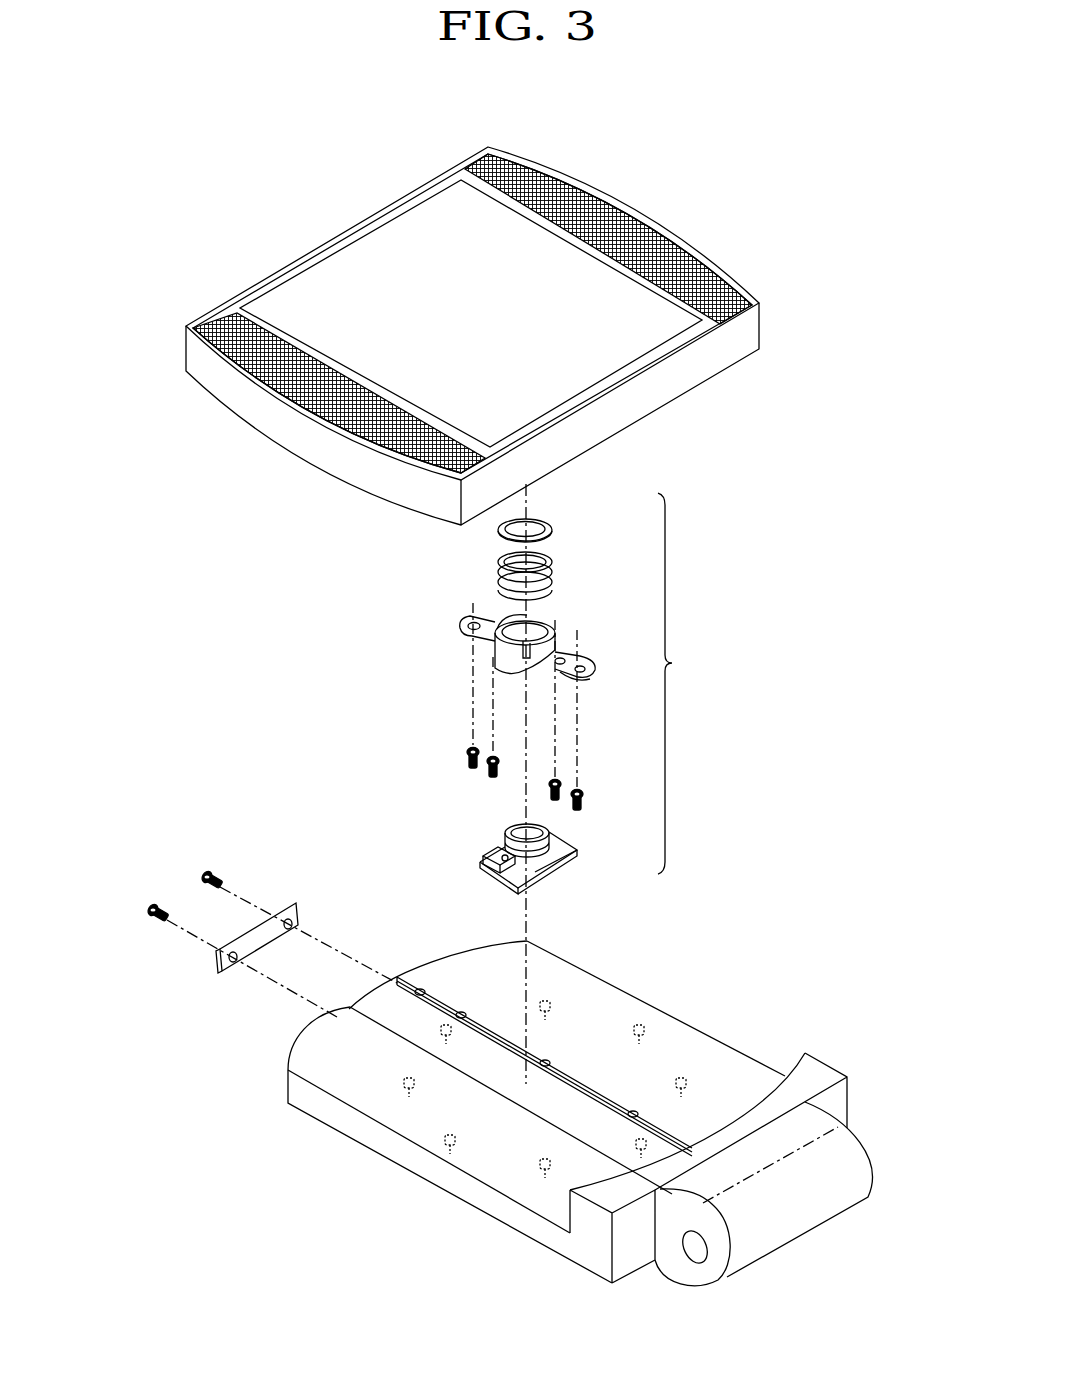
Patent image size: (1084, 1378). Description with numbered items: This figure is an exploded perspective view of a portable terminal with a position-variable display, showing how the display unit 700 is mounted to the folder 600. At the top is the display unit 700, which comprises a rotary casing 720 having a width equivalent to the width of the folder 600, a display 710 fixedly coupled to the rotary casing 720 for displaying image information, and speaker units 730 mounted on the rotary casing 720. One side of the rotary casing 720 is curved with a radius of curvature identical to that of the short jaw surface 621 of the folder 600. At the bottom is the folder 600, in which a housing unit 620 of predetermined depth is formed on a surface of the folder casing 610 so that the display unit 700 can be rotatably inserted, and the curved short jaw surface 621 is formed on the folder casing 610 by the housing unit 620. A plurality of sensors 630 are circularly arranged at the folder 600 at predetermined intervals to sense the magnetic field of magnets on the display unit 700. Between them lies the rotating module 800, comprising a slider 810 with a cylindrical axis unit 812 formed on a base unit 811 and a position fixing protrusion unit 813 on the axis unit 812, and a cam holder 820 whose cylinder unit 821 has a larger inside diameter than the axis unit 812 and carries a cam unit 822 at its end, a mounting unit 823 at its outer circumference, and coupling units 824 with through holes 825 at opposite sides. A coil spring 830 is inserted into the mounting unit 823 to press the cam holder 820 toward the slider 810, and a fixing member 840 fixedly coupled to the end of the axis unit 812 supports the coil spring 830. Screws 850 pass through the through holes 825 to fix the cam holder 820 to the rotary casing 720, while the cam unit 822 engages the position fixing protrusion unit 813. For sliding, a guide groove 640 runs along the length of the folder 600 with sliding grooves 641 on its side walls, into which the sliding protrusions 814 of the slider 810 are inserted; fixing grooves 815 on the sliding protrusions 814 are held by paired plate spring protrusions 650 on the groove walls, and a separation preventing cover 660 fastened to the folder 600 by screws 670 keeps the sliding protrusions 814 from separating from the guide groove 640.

The folder 600 is at (543, 1121).
The folder casing 610 is at (347, 1122).
The housing unit 620 is at (347, 1088).
The short jaw surface 621 is at (565, 1210).
The sensors 630 is at (446, 1148).
The guide groove 640 is at (585, 1102).
The sliding grooves 641 is at (400, 977).
The plate spring protrusions 650 is at (690, 1076).
The separation preventing cover 660 is at (285, 900).
The screws 670 is at (197, 863).
The display unit 700 is at (449, 313).
The display 710 is at (418, 219).
The rotary casing 720 is at (681, 207).
The speaker units 730 is at (490, 162).
The rotating module 800 is at (545, 779).
The slider 810 is at (515, 865).
The base unit 811 is at (529, 871).
The axis unit 812 is at (556, 859).
The position fixing protrusion unit 813 is at (501, 853).
The sliding protrusions 814 is at (482, 861).
The fixing grooves 815 is at (498, 879).
The cam holder 820 is at (515, 678).
The cylinder unit 821 is at (496, 651).
The cam unit 822 is at (520, 677).
The mounting unit 823 is at (503, 613).
The coupling units 824 is at (571, 659).
The through holes 825 is at (580, 673).
The coil spring 830 is at (563, 556).
The fixing member 840 is at (561, 513).
The screws 850 is at (462, 749).